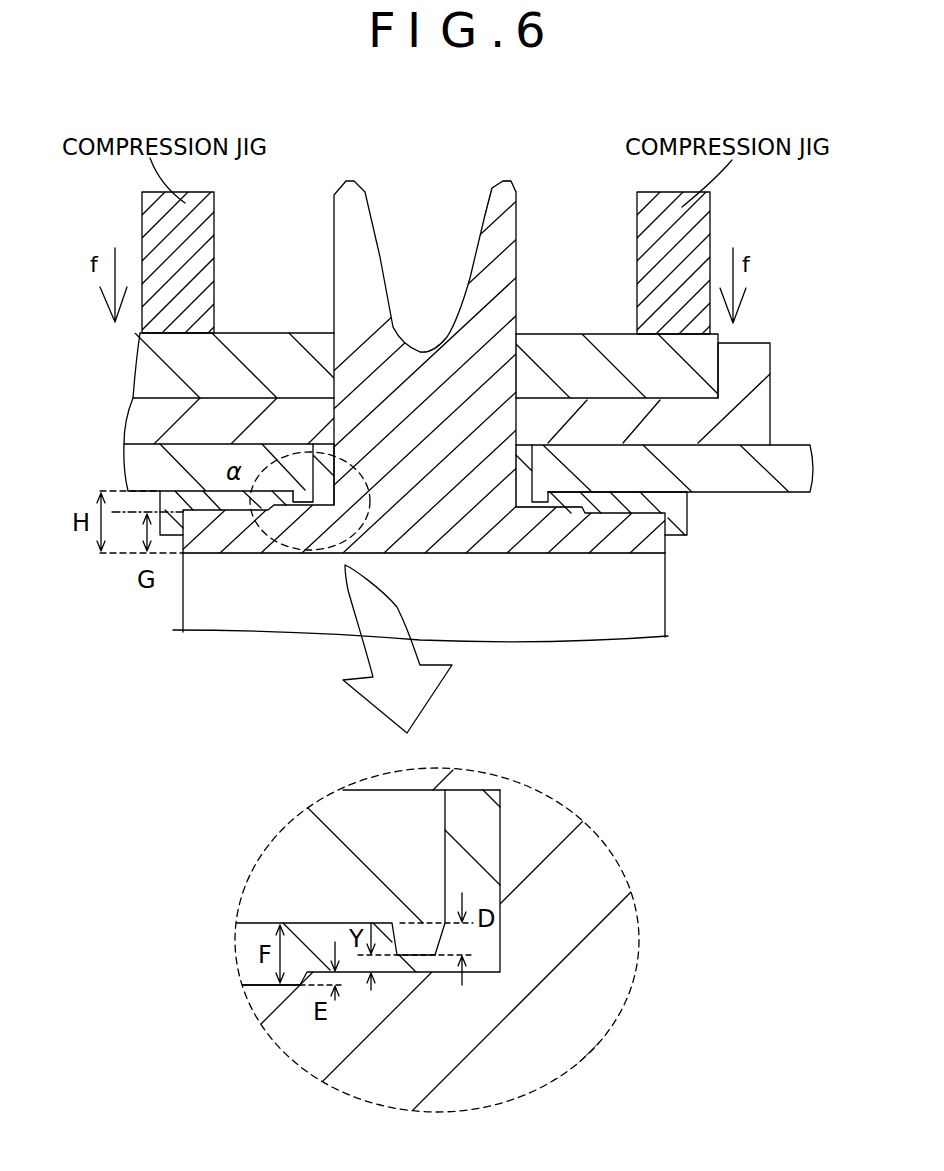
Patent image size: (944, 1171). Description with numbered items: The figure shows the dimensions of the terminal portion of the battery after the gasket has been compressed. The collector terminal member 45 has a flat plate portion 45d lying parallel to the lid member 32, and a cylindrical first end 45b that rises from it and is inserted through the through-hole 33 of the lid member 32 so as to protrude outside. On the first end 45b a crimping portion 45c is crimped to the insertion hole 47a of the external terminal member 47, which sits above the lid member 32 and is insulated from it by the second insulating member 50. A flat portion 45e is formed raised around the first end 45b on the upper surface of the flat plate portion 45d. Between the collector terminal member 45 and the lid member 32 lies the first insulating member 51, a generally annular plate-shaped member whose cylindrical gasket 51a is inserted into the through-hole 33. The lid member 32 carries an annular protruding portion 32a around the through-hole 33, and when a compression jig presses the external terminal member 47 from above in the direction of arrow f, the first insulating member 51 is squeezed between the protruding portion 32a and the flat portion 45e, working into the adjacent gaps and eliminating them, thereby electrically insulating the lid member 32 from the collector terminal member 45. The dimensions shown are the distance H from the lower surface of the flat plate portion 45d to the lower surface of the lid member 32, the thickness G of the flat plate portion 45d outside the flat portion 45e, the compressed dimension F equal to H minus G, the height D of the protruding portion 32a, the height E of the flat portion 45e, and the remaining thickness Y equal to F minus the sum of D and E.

The lid member 32 is at (778, 460).
The protruding portion 32a is at (538, 495).
The through-hole 33 is at (516, 500).
The collector terminal member 45 is at (632, 610).
The first end 45b is at (408, 372).
The crimping portion 45c is at (516, 208).
The flat plate portion 45d is at (610, 544).
The flat portion 45e is at (560, 494).
The external terminal member 47 is at (272, 355).
The insertion hole 47a is at (520, 370).
The second insulating member 50 is at (750, 347).
The first insulating member 51 is at (232, 500).
The gasket 51a is at (320, 507).